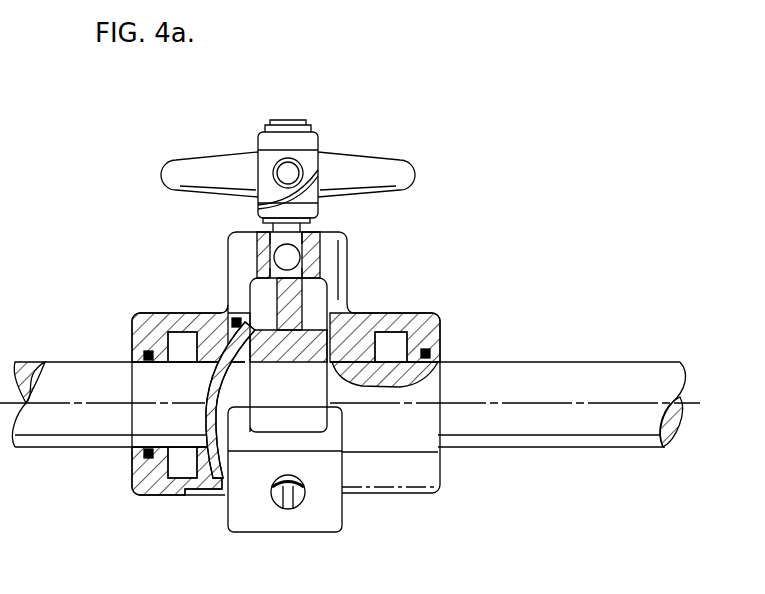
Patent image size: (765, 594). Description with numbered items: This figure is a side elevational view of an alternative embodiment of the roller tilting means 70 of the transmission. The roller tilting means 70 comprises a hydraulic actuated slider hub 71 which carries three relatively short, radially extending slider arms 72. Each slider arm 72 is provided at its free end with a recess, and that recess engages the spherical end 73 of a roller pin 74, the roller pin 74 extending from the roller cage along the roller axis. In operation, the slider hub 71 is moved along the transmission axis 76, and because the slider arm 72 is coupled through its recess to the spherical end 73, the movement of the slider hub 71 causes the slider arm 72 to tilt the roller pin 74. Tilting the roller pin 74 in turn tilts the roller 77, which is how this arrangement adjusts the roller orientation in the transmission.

The roller tilting means 70 is at (378, 223).
The hydraulic actuated slider hub 71 is at (440, 318).
The slider arm 72 is at (336, 283).
The spherical end 73 is at (280, 258).
The roller pin 74 is at (262, 235).
The transmission axis 76 is at (690, 400).
The roller 77 is at (400, 168).